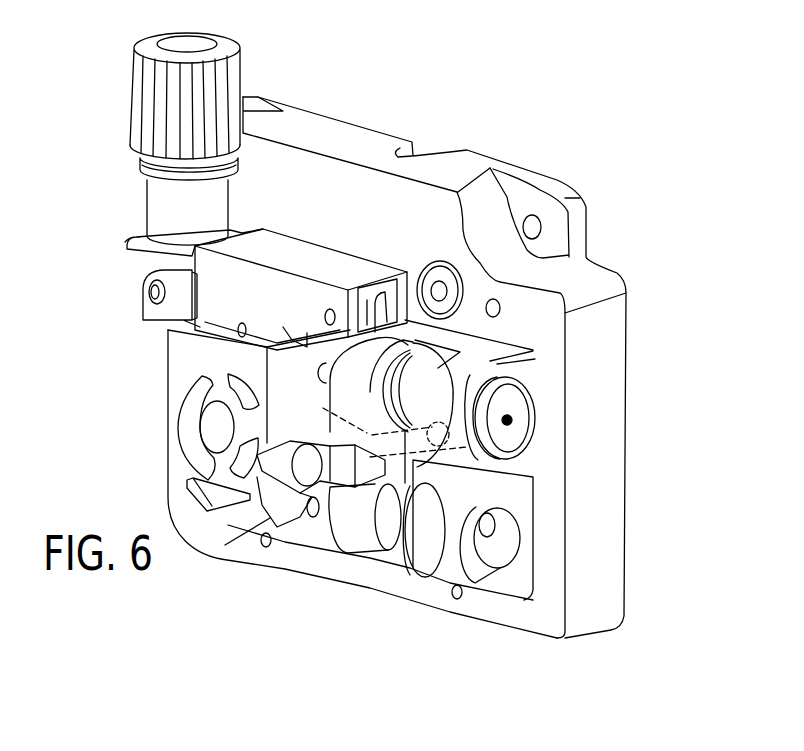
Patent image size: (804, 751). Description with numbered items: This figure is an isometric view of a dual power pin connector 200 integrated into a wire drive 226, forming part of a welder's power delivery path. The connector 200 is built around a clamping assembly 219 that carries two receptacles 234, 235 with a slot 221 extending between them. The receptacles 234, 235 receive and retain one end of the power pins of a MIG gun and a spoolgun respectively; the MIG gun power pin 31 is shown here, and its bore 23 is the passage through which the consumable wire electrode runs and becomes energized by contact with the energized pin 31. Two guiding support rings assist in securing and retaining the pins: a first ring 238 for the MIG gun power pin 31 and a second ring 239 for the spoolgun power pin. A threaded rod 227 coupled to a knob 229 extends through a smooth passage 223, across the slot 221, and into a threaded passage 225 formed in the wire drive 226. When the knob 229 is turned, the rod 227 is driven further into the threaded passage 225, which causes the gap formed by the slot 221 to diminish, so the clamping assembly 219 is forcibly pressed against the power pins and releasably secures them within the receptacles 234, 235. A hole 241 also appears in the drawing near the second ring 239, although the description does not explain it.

The dual power pin connector 200 is at (328, 600).
The clamping assembly 219 is at (340, 530).
The slot 221 is at (418, 472).
The smooth passage 223 is at (372, 428).
The threaded passage 225 is at (428, 424).
The wire drive 226 is at (148, 403).
The threaded rod 227 is at (372, 426).
The knob 229 is at (262, 502).
The receptacle 234 is at (405, 355).
The receptacle 235 is at (392, 527).
The first ring 238 is at (533, 363).
The second ring 239 is at (447, 570).
The hole 241 is at (498, 548).
The bore 23 is at (507, 420).
The power pin 31 is at (530, 410).